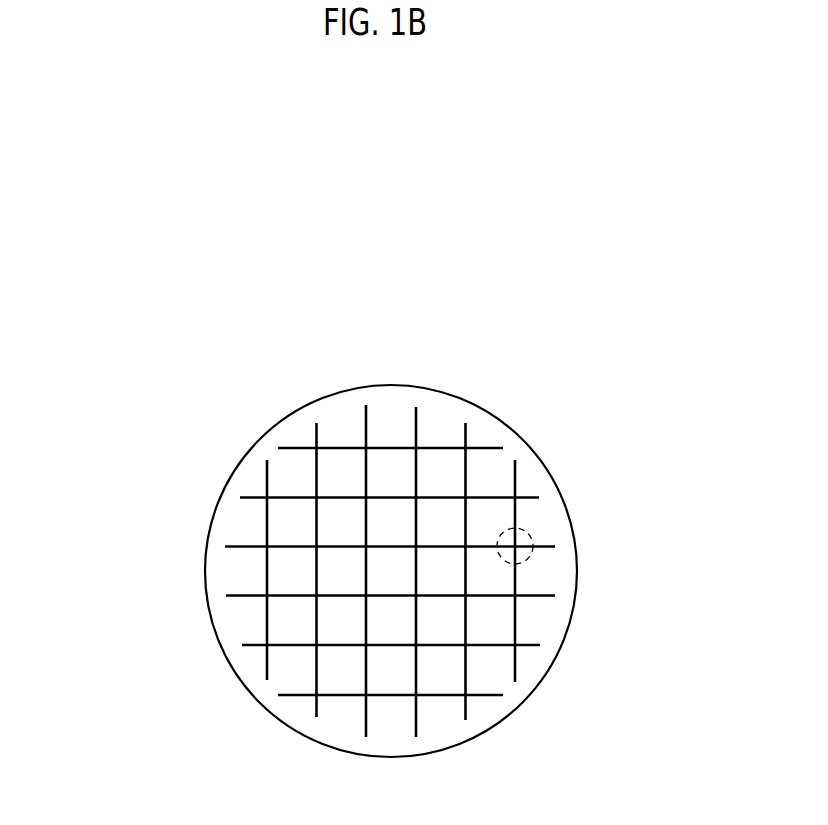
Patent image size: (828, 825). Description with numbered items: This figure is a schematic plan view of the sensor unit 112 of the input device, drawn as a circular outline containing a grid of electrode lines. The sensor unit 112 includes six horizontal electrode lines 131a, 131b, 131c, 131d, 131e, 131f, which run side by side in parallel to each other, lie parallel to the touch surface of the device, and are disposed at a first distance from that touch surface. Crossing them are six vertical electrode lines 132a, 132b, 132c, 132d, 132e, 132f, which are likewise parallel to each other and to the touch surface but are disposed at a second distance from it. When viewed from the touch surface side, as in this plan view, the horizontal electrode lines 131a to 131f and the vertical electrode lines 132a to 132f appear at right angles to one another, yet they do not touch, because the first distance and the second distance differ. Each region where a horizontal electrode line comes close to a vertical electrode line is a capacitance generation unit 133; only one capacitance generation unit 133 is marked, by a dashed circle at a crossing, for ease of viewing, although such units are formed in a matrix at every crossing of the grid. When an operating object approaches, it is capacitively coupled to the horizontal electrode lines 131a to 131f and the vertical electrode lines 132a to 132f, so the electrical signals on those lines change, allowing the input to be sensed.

The sensor unit 112 is at (494, 428).
The horizontal electrode line 131a is at (298, 447).
The horizontal electrode line 131b is at (256, 495).
The horizontal electrode line 131c is at (243, 545).
The horizontal electrode line 131d is at (240, 594).
The horizontal electrode line 131e is at (254, 644).
The horizontal electrode line 131f is at (298, 697).
The vertical electrode line 132a is at (265, 669).
The vertical electrode line 132b is at (318, 716).
The vertical electrode line 132c is at (368, 719).
The vertical electrode line 132d is at (418, 720).
The vertical electrode line 132e is at (468, 708).
The vertical electrode line 132f is at (516, 672).
The capacitance generation unit 133 is at (528, 530).